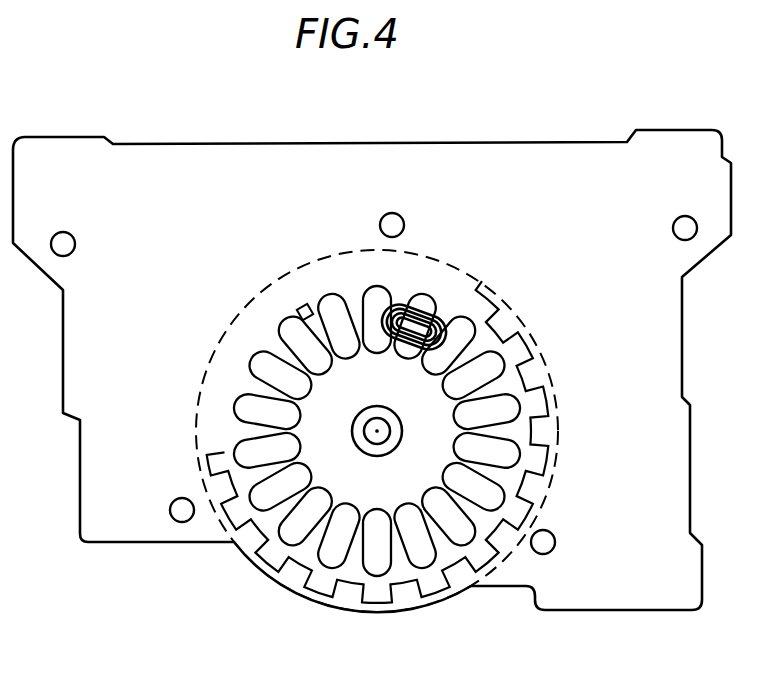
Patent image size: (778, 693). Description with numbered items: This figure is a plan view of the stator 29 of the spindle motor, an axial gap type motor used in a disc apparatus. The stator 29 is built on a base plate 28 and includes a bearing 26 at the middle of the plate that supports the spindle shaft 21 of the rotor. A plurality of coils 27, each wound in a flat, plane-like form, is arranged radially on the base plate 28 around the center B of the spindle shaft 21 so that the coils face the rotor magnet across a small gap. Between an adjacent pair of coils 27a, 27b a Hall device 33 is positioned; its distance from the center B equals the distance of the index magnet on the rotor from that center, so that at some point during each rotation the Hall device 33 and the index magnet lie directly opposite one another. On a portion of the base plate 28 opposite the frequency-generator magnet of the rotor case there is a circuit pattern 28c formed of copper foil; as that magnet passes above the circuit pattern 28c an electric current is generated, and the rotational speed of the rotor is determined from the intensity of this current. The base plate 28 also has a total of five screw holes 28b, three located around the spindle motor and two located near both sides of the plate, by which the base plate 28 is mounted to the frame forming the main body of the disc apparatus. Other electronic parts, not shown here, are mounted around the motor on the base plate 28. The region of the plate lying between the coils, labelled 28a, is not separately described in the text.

The stator 29 is at (417, 90).
The base plate 28 is at (460, 152).
The stator core 28a is at (310, 332).
The screw holes 28b is at (70, 233).
The circuit pattern 28c is at (522, 343).
The coils 27 is at (425, 298).
The coil 27a is at (322, 293).
The coil 27b is at (282, 317).
The Hall device 33 is at (300, 305).
The bearing 26 is at (370, 406).
The spindle shaft 21 is at (385, 419).
The center B is at (380, 432).